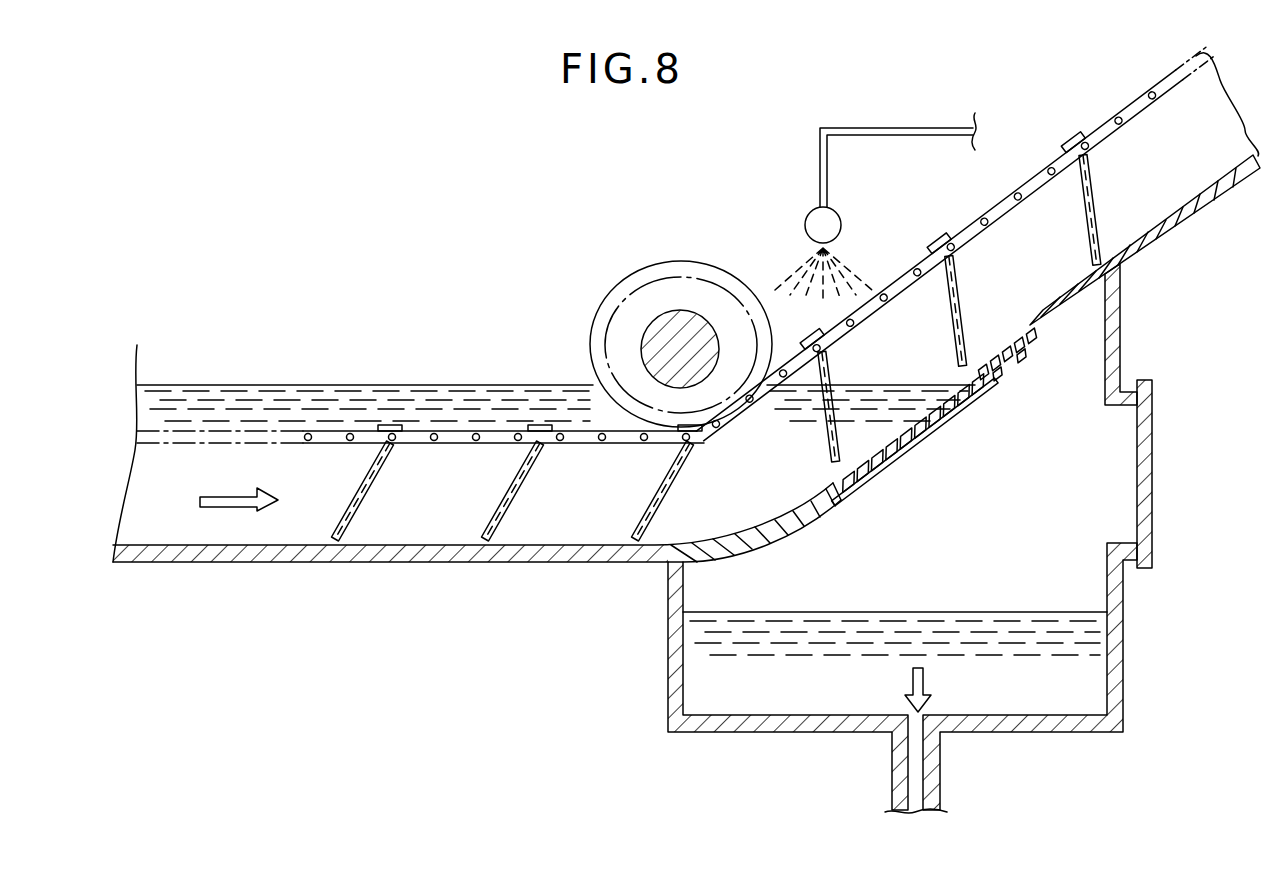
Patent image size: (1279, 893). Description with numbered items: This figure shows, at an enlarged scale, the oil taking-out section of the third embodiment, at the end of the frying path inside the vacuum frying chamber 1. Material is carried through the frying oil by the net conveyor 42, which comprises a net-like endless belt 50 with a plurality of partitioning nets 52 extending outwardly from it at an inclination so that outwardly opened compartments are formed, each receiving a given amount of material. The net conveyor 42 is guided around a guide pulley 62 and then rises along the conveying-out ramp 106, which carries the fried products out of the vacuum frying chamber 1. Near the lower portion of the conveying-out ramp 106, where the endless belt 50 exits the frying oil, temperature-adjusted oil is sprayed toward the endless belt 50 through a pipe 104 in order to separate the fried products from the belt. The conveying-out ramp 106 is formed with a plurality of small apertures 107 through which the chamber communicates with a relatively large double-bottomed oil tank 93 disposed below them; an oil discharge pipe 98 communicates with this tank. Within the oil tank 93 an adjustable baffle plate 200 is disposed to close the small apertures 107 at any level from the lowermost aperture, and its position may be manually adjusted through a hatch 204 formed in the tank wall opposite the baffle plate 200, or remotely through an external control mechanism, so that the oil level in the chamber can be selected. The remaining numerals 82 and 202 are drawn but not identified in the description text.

The vacuum frying chamber 1 is at (743, 150).
The net conveyor 42 is at (1033, 160).
The endless belt 50 is at (481, 431).
The partitioning nets 52 is at (483, 527).
The guide pulley 62 is at (665, 320).
The trough bottom plate 82 is at (185, 562).
The double-bottomed oil tank 93 is at (717, 587).
The oil discharge pipe 98 is at (905, 792).
The pipe 104 is at (890, 128).
The conveying-out ramp 106 is at (1087, 305).
The small apertures 107 is at (1010, 357).
The adjustable baffle plate 200 is at (930, 432).
The tank wall 202 is at (1123, 653).
The hatch 204 is at (1153, 480).